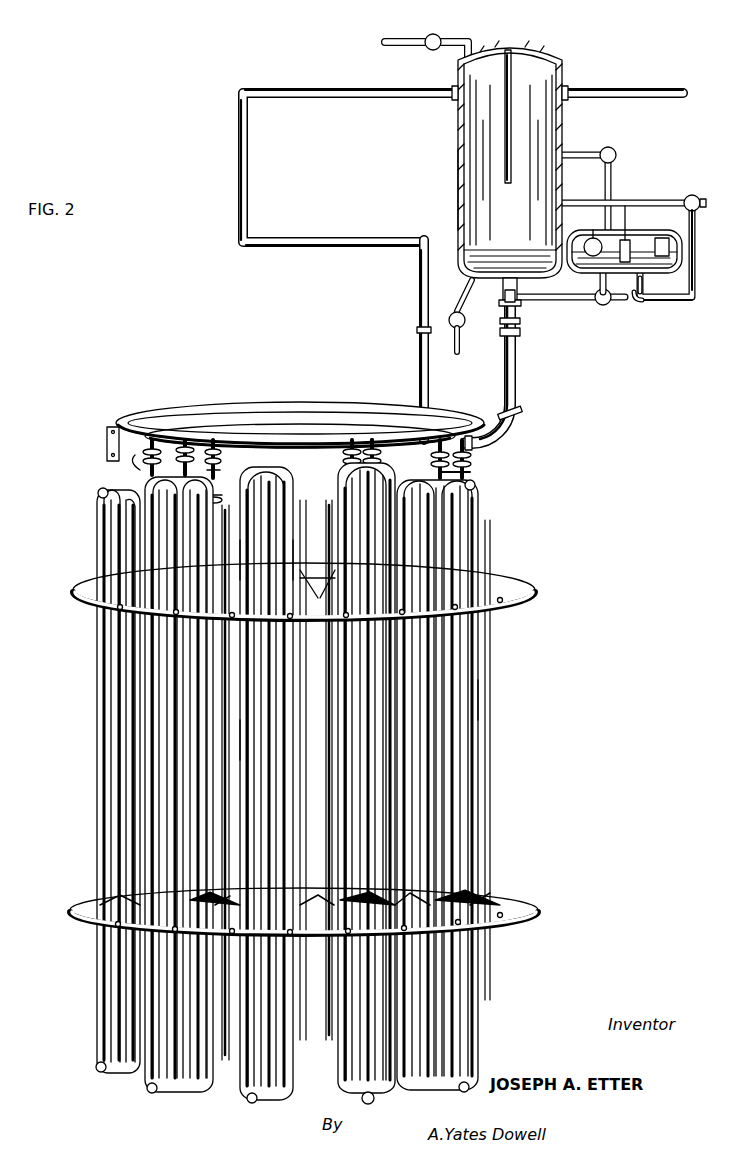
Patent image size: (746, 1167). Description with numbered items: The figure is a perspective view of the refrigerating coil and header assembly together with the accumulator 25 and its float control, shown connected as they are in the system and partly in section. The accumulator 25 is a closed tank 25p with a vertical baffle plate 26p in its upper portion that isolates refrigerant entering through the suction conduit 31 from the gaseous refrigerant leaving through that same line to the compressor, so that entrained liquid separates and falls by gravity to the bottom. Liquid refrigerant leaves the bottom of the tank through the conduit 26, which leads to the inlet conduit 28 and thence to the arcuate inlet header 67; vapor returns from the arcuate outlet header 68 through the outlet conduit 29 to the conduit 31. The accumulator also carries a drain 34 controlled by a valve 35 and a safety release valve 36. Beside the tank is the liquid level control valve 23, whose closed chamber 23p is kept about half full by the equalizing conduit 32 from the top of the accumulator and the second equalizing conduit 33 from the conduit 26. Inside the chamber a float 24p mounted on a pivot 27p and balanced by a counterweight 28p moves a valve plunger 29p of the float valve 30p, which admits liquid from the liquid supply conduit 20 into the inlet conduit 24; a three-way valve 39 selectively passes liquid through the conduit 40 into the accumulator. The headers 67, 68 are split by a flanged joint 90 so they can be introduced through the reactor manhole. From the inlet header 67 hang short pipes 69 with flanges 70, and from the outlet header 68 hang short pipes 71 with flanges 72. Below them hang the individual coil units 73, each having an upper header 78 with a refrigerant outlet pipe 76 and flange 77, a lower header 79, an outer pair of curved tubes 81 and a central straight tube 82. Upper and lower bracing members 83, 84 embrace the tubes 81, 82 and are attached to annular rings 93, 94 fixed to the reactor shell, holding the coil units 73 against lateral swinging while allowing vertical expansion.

The liquid supply conduit 20 is at (672, 306).
The liquid level control valve 23 is at (648, 228).
The closed chamber 23p is at (592, 276).
The inlet conduit 24 is at (696, 290).
The float 24p is at (592, 238).
The accumulator 25 is at (455, 138).
The closed tank 25p is at (456, 188).
The conduit 26 is at (503, 298).
The vertical baffle plate 26p is at (504, 183).
The pivot 27p is at (626, 234).
The inlet conduit 28 is at (516, 388).
The counterweight 28p is at (662, 238).
The outlet conduit 29 is at (430, 388).
The valve plunger 29p is at (636, 278).
The float valve 30p is at (640, 300).
The conduit 31 is at (302, 92).
The equalizing conduit 32 is at (612, 170).
The second equalizing conduit 33 is at (556, 302).
The drain 34 is at (469, 307).
The valve 35 is at (462, 332).
The safety release valve 36 is at (430, 50).
The three-way valve 39 is at (692, 196).
The conduit 40 is at (633, 196).
The inlet header 67 is at (318, 425).
The outlet header 68 is at (258, 402).
The inlet pipes 69 is at (220, 446).
The flange 70 is at (227, 477).
The outlet pipes 71 is at (183, 445).
The flanges 72 is at (466, 462).
The coil units 73 is at (92, 745).
The refrigerant outlet pipe 76 is at (472, 478).
The flange 77 is at (372, 420).
The upper header 78 is at (97, 490).
The lower header 79 is at (100, 1072).
The outer tubes 81 is at (246, 520).
The straight tube 82 is at (366, 748).
The upper bracing member 83 is at (317, 591).
The lower bracing member 84 is at (480, 895).
The flanged joint 90 is at (106, 438).
The annular ring 93 is at (528, 584).
The annular ring 94 is at (514, 896).